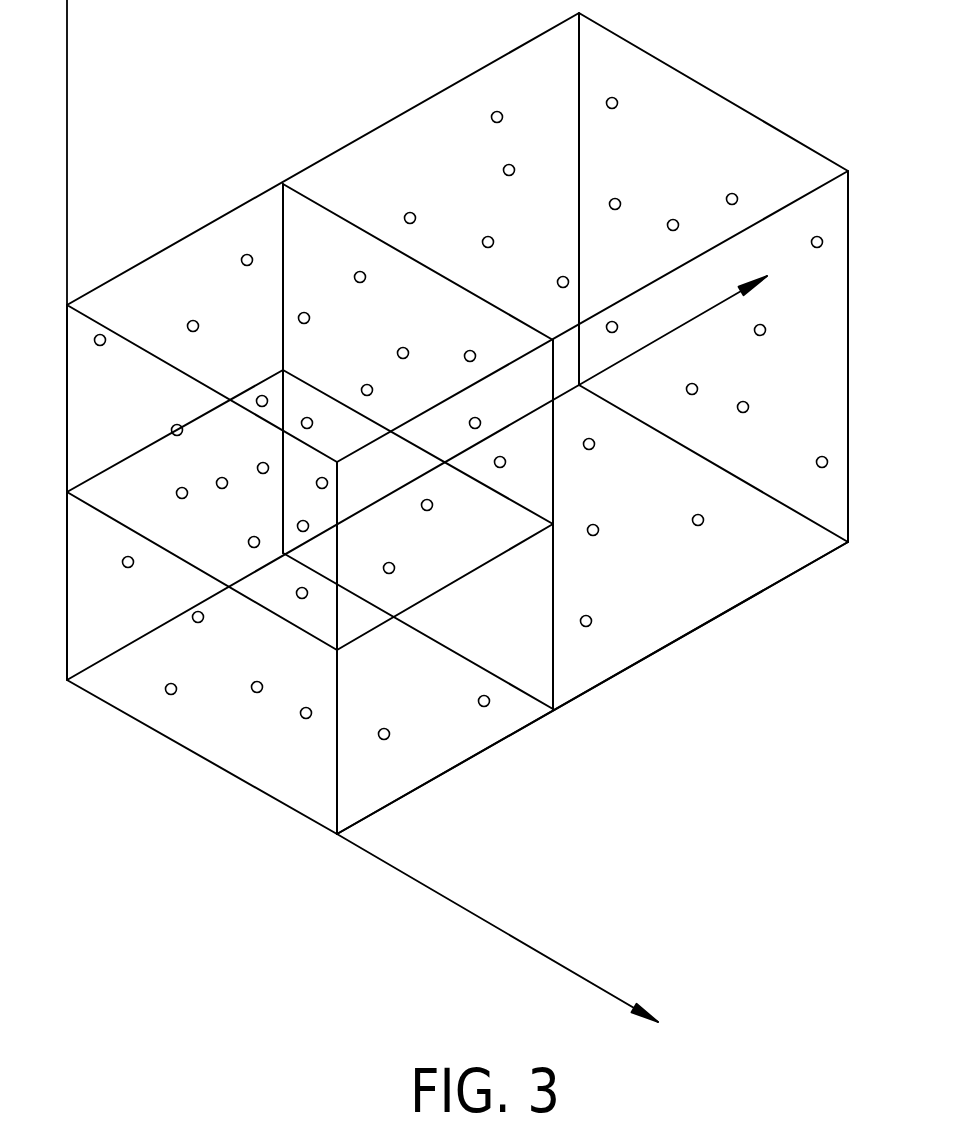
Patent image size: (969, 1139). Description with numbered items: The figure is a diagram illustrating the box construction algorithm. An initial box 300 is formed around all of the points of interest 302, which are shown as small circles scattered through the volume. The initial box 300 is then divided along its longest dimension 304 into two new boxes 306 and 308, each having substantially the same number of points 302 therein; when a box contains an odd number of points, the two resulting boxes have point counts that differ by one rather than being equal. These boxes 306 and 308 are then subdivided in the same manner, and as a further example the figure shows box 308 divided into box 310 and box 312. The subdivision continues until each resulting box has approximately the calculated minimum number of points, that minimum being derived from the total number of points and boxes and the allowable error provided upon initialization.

The initial box 300 is at (180, 238).
The points of interest 302 is at (251, 265).
The longest dimension 304 is at (468, 760).
The box 306 is at (652, 187).
The box 308 is at (250, 510).
The box 310 is at (323, 340).
The box 312 is at (288, 668).